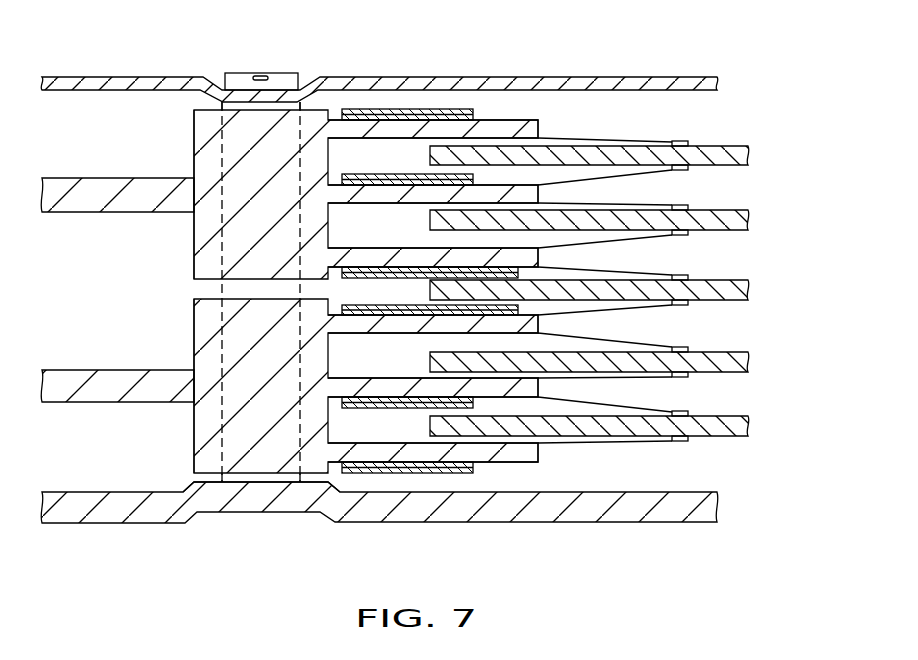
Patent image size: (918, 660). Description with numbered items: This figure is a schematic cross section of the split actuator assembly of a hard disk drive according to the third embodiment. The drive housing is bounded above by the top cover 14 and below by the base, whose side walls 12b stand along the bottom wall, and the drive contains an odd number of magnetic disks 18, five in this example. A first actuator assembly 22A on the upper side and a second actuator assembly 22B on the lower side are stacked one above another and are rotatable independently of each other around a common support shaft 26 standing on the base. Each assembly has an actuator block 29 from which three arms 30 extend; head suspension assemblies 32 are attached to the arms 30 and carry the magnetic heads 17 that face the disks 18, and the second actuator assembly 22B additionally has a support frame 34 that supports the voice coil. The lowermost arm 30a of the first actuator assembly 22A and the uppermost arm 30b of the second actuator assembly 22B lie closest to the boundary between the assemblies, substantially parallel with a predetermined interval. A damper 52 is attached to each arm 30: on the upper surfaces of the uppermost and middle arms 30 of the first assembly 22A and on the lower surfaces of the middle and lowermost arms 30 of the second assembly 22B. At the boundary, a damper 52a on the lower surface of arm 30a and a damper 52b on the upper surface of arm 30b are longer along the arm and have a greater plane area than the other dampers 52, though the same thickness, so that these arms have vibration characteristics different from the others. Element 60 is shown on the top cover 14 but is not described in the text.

The side wall 12b is at (622, 510).
The top cover 14 is at (597, 79).
The magnetic head 17 is at (686, 141).
The magnetic disk 18 is at (725, 156).
The first actuator assembly 22A is at (172, 255).
The second actuator assembly 22B is at (172, 449).
The support shaft 26 is at (256, 476).
The actuator block 29 is at (203, 137).
The arm 30 is at (538, 122).
The lowermost arm 30a is at (374, 253).
The uppermost arm 30b is at (376, 328).
The head suspension assembly 32 is at (613, 175).
The support frame 34 is at (78, 190).
The damper 52 is at (412, 174).
The damper 52a is at (397, 277).
The damper 52b is at (408, 306).
The sensor element 60 is at (282, 78).